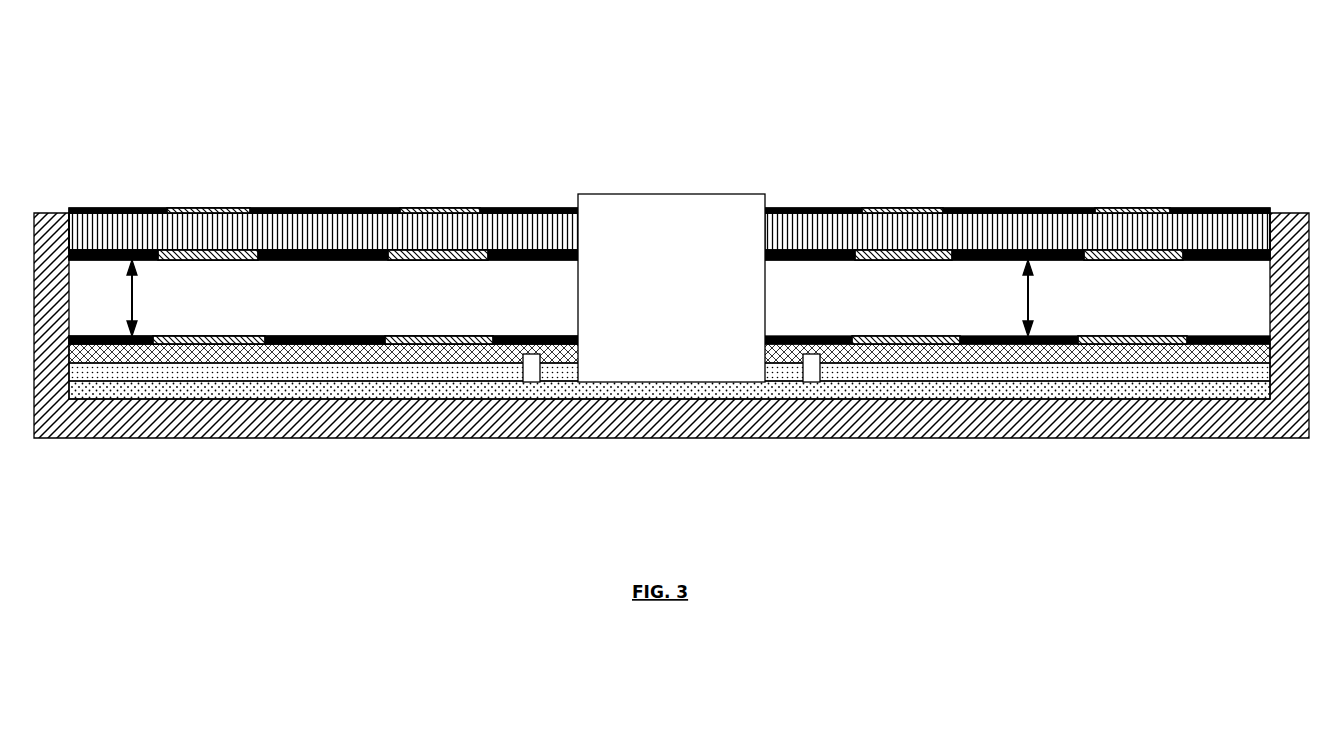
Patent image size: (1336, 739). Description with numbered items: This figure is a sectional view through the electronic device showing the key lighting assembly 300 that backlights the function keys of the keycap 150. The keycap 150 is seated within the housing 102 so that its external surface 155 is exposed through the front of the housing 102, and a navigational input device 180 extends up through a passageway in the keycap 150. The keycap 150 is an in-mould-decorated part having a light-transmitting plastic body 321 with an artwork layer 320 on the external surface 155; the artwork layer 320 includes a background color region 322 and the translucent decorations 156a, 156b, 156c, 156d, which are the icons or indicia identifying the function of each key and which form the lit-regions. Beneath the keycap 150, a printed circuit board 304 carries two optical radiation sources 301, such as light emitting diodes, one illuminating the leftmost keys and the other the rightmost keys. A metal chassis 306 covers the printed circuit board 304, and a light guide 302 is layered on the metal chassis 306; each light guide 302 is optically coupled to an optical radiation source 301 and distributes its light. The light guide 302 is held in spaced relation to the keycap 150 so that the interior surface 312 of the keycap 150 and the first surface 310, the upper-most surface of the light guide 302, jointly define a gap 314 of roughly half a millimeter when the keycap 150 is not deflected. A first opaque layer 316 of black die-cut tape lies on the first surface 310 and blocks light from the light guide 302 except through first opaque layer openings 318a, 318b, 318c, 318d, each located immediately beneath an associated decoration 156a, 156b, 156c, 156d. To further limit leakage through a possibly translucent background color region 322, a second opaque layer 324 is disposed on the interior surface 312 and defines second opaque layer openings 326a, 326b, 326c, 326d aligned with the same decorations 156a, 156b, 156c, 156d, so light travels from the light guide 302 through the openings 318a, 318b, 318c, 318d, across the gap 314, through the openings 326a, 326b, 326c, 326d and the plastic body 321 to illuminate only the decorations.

The key lighting assembly 300 is at (640, 67).
The housing 102 is at (315, 420).
The keycap 150 is at (371, 233).
The external surface 155 is at (806, 208).
The first decoration 156a is at (222, 208).
The second decoration 156b is at (464, 208).
The third decoration 156c is at (915, 208).
The fourth decoration 156d is at (1128, 208).
The navigational input device 180 is at (700, 206).
The optical radiation source 301 is at (531, 372).
The light guide 302 is at (140, 353).
The printed circuit board 304 is at (453, 390).
The metal chassis 306 is at (401, 372).
The first surface 310 is at (1232, 343).
The interior surface 312 is at (1237, 247).
The gap 314 is at (132, 307).
The first opaque layer 316 is at (83, 343).
The first first opaque layer opening 318a is at (197, 343).
The second first opaque layer opening 318b is at (485, 340).
The third first opaque layer opening 318c is at (890, 343).
The fourth first opaque layer opening 318d is at (1117, 343).
The artwork layer 320 is at (342, 232).
The plastic body 321 is at (112, 233).
The background color region 322 is at (545, 209).
The second opaque layer 324 is at (984, 250).
The first second opaque layer opening 326a is at (243, 250).
The second second opaque layer opening 326b is at (484, 250).
The third second opaque layer opening 326c is at (947, 250).
The fourth second opaque layer opening 326d is at (1160, 250).